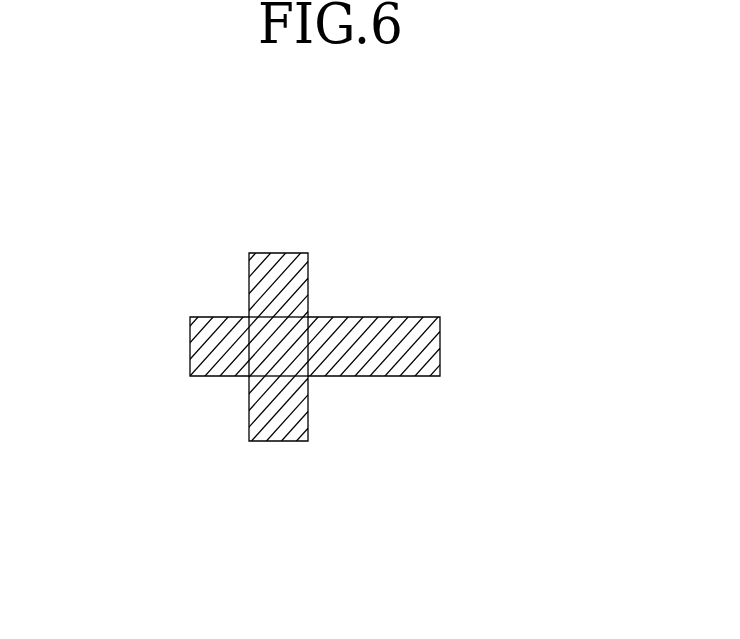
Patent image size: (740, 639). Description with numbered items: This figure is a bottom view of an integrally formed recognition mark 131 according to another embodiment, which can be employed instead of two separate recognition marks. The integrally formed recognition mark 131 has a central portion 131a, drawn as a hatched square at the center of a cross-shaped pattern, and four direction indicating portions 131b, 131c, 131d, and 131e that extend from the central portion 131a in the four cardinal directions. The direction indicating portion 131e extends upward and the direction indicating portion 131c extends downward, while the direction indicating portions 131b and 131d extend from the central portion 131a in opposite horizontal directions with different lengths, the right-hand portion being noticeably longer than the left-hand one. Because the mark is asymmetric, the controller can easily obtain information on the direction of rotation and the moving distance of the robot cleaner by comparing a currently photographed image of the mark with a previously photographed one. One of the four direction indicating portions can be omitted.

The integrally formed recognition mark 131 is at (314, 341).
The central portion 131a is at (263, 360).
The direction indicating portion 131b is at (398, 352).
The direction indicating portion 131c is at (275, 433).
The direction indicating portion 131d is at (212, 348).
The direction indicating portion 131e is at (283, 272).